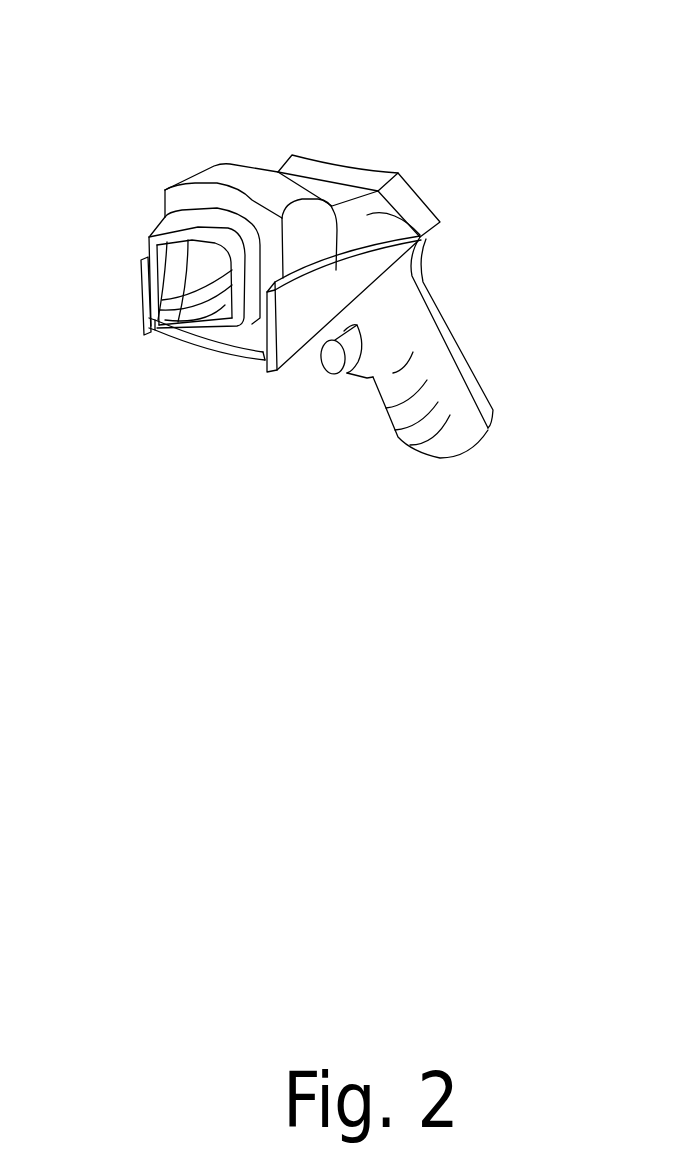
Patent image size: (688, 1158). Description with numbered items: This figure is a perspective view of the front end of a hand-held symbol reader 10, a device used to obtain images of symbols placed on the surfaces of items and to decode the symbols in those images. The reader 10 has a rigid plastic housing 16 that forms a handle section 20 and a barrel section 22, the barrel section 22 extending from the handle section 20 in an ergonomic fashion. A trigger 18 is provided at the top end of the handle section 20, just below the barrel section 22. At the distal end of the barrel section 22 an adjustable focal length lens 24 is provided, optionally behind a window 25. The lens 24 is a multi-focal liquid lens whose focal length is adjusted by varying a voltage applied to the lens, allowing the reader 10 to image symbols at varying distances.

The hand-held symbol reader 10 is at (338, 102).
The rigid plastic housing 16 is at (467, 354).
The trigger 18 is at (334, 378).
The handle section 20 is at (457, 453).
The barrel section 22 is at (420, 237).
The adjustable focal length lens 24 is at (217, 275).
The window 25 is at (152, 323).